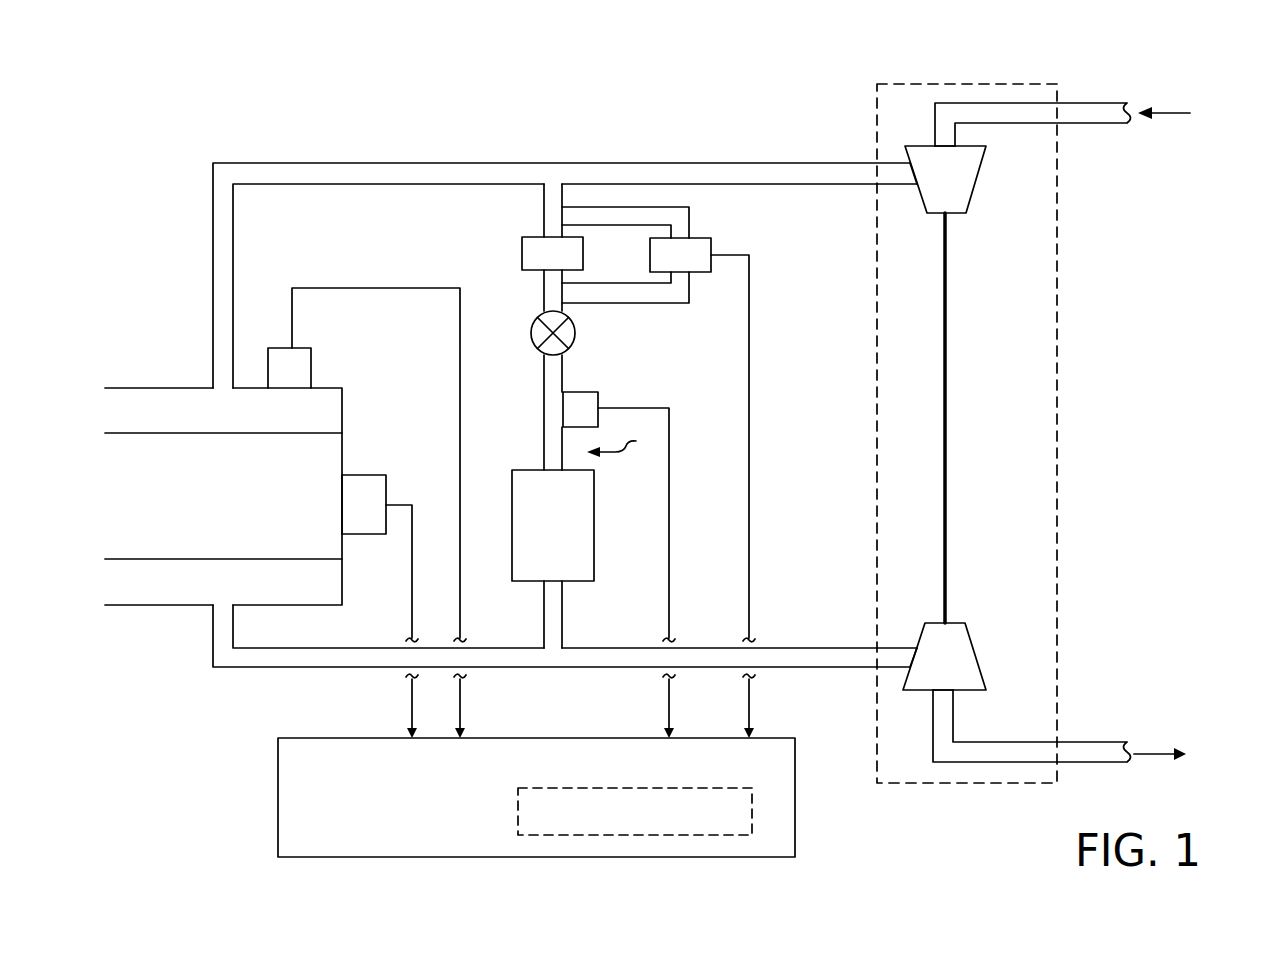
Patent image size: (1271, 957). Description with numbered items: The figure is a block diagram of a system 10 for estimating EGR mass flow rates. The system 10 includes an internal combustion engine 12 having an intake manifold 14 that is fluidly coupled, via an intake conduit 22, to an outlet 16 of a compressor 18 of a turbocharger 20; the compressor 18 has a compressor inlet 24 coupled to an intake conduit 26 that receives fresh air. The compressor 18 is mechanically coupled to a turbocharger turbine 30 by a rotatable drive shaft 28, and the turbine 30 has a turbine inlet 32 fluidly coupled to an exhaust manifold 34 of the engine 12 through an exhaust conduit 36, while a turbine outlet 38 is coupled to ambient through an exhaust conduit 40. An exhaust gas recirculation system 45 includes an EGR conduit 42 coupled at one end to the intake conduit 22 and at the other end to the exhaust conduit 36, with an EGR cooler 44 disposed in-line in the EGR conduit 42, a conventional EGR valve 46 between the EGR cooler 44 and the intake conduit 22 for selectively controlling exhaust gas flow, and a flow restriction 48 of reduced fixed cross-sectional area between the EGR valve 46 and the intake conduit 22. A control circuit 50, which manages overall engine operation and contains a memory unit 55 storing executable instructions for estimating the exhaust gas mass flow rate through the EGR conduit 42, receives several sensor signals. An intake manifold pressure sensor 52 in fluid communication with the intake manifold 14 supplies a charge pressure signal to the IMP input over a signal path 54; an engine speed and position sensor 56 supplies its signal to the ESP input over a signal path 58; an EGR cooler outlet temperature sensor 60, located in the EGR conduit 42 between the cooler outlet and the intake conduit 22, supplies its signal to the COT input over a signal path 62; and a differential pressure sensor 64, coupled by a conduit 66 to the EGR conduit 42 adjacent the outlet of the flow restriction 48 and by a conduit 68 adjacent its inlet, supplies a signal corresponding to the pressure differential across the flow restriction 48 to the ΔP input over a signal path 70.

The system for estimating EGR mass flow rates 10 is at (118, 206).
The internal combustion engine 12 is at (104, 468).
The intake manifold 14 is at (121, 388).
The compressor outlet 16 is at (913, 180).
The compressor 18 is at (975, 185).
The turbocharger 20 is at (1059, 398).
The intake conduit 22 is at (466, 163).
The compressor inlet 24 is at (940, 144).
The intake conduit 26 is at (1082, 125).
The rotatable drive shaft 28 is at (945, 434).
The turbocharger turbine 30 is at (970, 643).
The turbine inlet 32 is at (913, 662).
The exhaust manifold 34 is at (158, 606).
The exhaust conduit 36 is at (708, 648).
The turbine outlet 38 is at (940, 692).
The exhaust conduit 40 is at (1090, 742).
The EGR conduit 42 is at (563, 622).
The EGR cooler 44 is at (530, 470).
The exhaust gas recirculation system 45 is at (626, 443).
The EGR valve 46 is at (533, 334).
The flow restriction 48 is at (522, 260).
The control circuit 50 is at (796, 846).
The intake manifold pressure sensor 52 is at (300, 348).
The signal path 54 is at (375, 288).
The memory unit 55 is at (518, 813).
The engine speed and position sensor 56 is at (365, 535).
The signal path 58 is at (404, 505).
The EGR cooler outlet temperature sensor 60 is at (586, 392).
The signal path 62 is at (669, 518).
The differential pressure sensor 64 is at (703, 272).
The conduit 66 is at (690, 232).
The conduit 68 is at (663, 303).
The signal path 70 is at (749, 373).